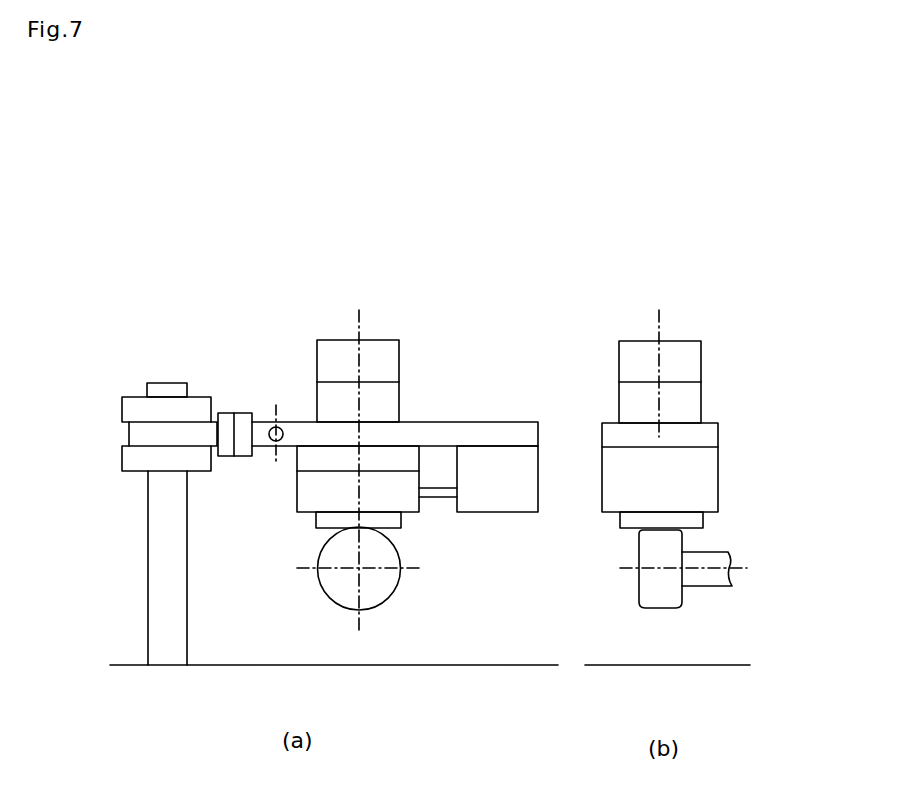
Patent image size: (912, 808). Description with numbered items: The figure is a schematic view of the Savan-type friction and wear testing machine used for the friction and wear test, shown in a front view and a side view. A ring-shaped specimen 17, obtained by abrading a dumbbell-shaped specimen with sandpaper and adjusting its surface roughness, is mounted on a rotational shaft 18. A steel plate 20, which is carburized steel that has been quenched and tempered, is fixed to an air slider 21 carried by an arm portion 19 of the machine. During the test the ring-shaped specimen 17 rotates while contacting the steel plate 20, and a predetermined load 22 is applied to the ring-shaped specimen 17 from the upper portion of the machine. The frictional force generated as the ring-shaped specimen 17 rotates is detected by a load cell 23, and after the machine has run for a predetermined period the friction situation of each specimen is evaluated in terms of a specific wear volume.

The ring-shaped specimen 17 is at (667, 585).
The rotational shaft 18 is at (720, 562).
The arm portion 19 is at (702, 470).
The steel plate 20 is at (690, 518).
The air slider 21 is at (397, 470).
The load 22 is at (328, 352).
The load cell 23 is at (492, 462).